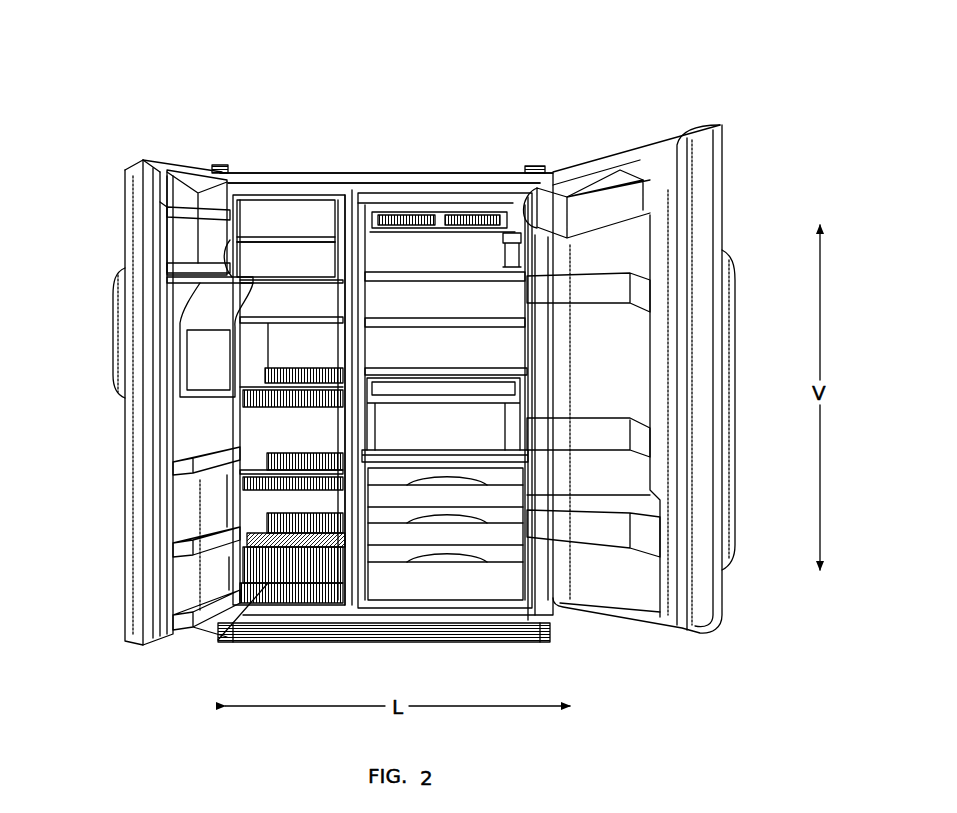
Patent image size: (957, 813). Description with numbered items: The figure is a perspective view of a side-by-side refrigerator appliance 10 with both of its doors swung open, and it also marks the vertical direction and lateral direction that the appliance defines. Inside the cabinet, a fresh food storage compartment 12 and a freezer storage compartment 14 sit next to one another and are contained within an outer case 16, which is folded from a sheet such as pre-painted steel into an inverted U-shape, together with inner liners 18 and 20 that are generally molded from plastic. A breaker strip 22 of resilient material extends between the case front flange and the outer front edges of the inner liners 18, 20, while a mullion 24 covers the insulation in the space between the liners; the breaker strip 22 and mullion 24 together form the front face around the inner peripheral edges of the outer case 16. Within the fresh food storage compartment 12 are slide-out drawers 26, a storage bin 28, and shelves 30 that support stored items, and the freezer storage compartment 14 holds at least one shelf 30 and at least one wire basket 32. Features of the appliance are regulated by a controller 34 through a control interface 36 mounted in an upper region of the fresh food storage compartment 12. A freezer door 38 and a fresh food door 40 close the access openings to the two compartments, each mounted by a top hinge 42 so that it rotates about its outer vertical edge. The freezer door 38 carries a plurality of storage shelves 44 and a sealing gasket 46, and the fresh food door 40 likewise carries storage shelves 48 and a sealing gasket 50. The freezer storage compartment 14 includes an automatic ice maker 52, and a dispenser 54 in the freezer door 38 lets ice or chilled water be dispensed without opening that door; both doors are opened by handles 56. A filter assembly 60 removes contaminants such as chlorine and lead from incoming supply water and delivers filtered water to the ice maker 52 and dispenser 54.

The refrigerator appliance 10 is at (535, 75).
The fresh food storage compartment 12 is at (420, 200).
The freezer storage compartment 14 is at (311, 213).
The outer case 16 is at (375, 172).
The inner liner 18 is at (523, 340).
The inner liner 20 is at (248, 565).
The breaker strip 22 is at (505, 175).
The mullion 24 is at (342, 447).
The slide-out drawers 26 is at (506, 493).
The storage bin 28 is at (457, 593).
The shelves 30 is at (325, 317).
The wire basket 32 is at (300, 378).
The controller 34 is at (445, 218).
The control interface 36 is at (393, 215).
The freezer door 38 is at (120, 207).
The fresh food door 40 is at (725, 155).
The top hinge 42 is at (218, 165).
The storage shelves 44 is at (183, 467).
The sealing gasket 46 is at (158, 585).
The storage shelves 48 is at (598, 545).
The sealing gasket 50 is at (683, 240).
The automatic ice maker 52 is at (317, 268).
The dispenser 54 is at (200, 385).
The handles 56 is at (112, 318).
The filter assembly 60 is at (520, 270).